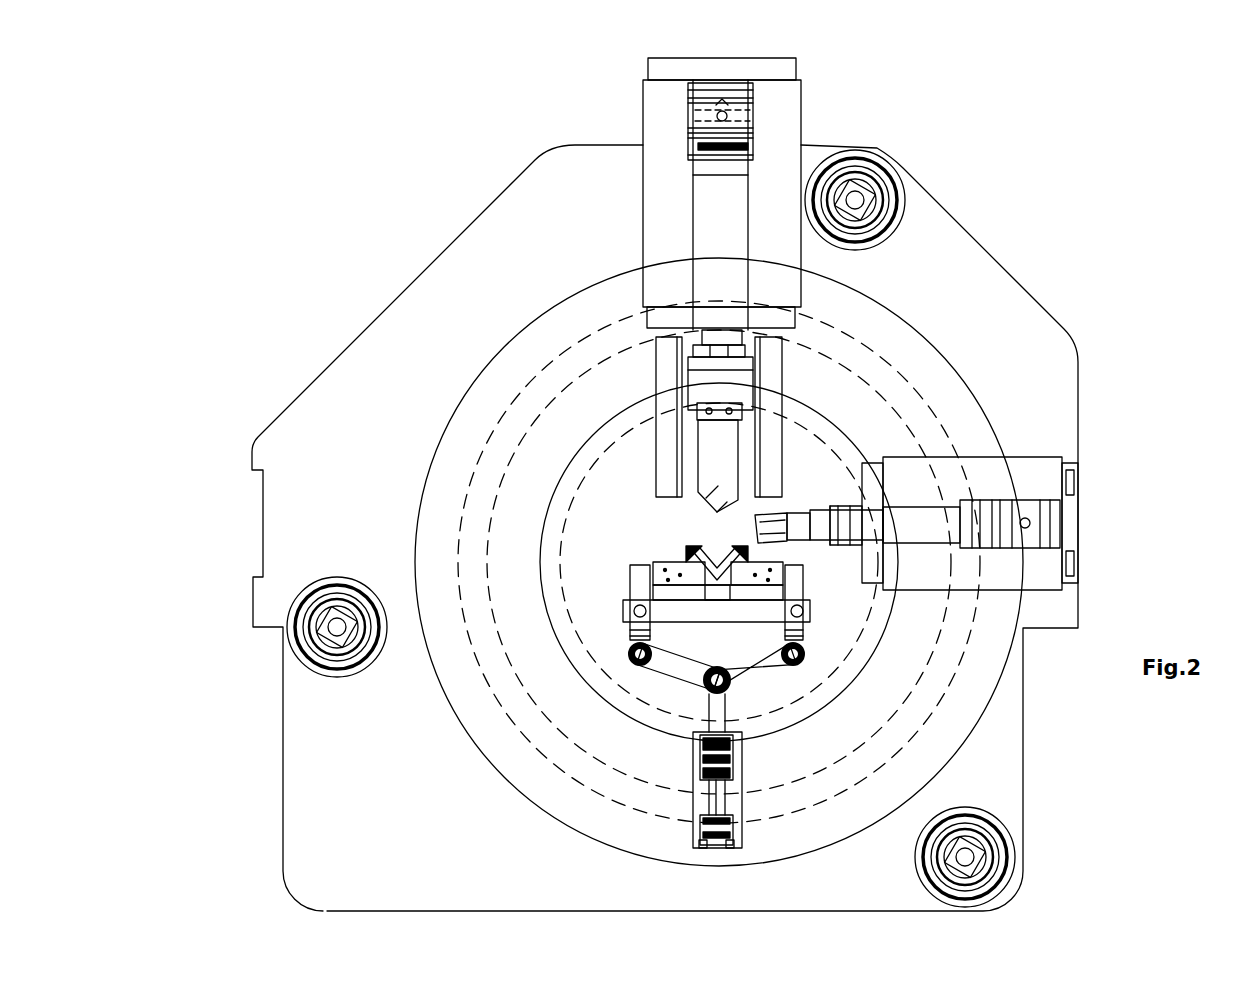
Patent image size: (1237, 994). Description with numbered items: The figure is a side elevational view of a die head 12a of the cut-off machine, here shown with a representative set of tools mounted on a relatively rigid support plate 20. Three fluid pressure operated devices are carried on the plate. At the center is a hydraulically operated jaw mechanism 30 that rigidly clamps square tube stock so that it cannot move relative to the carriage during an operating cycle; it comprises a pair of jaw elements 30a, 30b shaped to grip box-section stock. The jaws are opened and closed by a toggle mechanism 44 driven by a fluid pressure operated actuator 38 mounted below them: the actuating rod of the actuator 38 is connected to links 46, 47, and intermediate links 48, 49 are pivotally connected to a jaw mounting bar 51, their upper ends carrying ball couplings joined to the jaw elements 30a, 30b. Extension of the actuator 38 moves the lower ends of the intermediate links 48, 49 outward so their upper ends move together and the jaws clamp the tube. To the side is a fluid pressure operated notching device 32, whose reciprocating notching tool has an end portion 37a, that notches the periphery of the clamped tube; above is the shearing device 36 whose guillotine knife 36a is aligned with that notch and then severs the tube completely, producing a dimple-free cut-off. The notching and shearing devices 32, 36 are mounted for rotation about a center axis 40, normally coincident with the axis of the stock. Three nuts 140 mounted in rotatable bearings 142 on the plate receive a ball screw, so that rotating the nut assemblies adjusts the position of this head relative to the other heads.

The head 12a is at (1120, 334).
The support plate 20 is at (983, 304).
The jaw mechanism 30 is at (685, 640).
The jaw element 30a is at (665, 560).
The jaw element 30b is at (787, 560).
The notching device 32 is at (1058, 452).
The shearing device 36 is at (815, 125).
The guillotine knife 36a is at (690, 512).
The side actuator rod end 37a is at (770, 535).
The actuator 38 is at (735, 785).
The center axis 40 is at (717, 563).
The toggle mechanism 44 is at (705, 652).
The link 46 is at (688, 673).
The link 47 is at (777, 667).
The intermediate link 48 is at (630, 597).
The intermediate link 49 is at (803, 605).
The jaw mounting bar 51 is at (732, 620).
The nut 140 is at (866, 190).
The rotatable bearing 142 is at (907, 215).